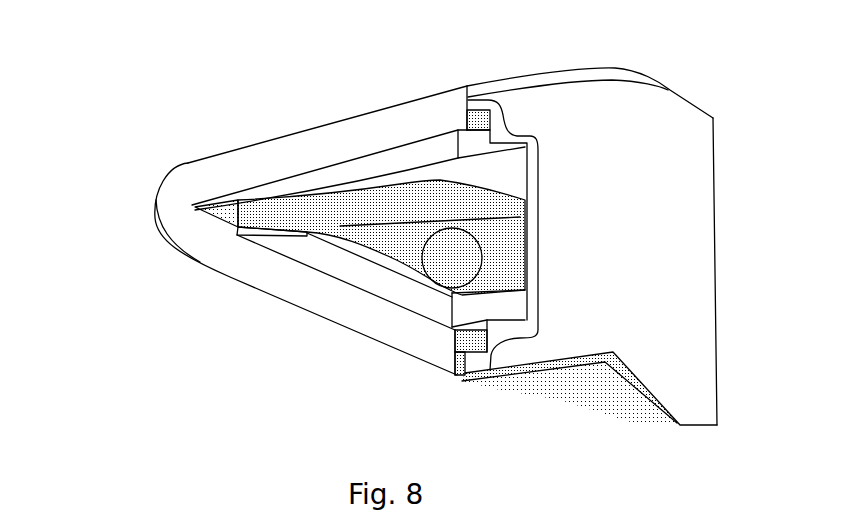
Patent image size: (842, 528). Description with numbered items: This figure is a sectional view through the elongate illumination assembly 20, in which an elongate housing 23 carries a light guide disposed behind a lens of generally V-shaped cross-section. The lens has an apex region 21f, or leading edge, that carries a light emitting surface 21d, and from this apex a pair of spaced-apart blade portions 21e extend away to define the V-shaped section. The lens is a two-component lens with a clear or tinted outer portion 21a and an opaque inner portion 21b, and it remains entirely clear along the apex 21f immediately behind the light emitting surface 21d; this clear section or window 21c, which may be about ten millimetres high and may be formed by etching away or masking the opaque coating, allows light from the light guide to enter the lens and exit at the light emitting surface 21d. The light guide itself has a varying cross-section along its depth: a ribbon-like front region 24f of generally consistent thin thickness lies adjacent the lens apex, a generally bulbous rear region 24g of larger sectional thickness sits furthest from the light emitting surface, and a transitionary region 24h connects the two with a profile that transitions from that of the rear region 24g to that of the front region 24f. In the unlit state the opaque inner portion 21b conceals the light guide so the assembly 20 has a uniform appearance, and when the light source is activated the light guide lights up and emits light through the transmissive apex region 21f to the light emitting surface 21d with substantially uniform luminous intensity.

The elongate illumination assembly 20 is at (680, 80).
The elongate housing 23 is at (718, 218).
The outer portion 21a is at (387, 122).
The inner portion 21b is at (328, 182).
The clear section (window) 21c is at (193, 203).
The light emitting surface 21d is at (155, 208).
The apex region 21f is at (151, 251).
The blade portions 21e is at (420, 97).
The front region 24f is at (252, 232).
The transitionary region 24h is at (400, 240).
The rear region 24g is at (497, 262).